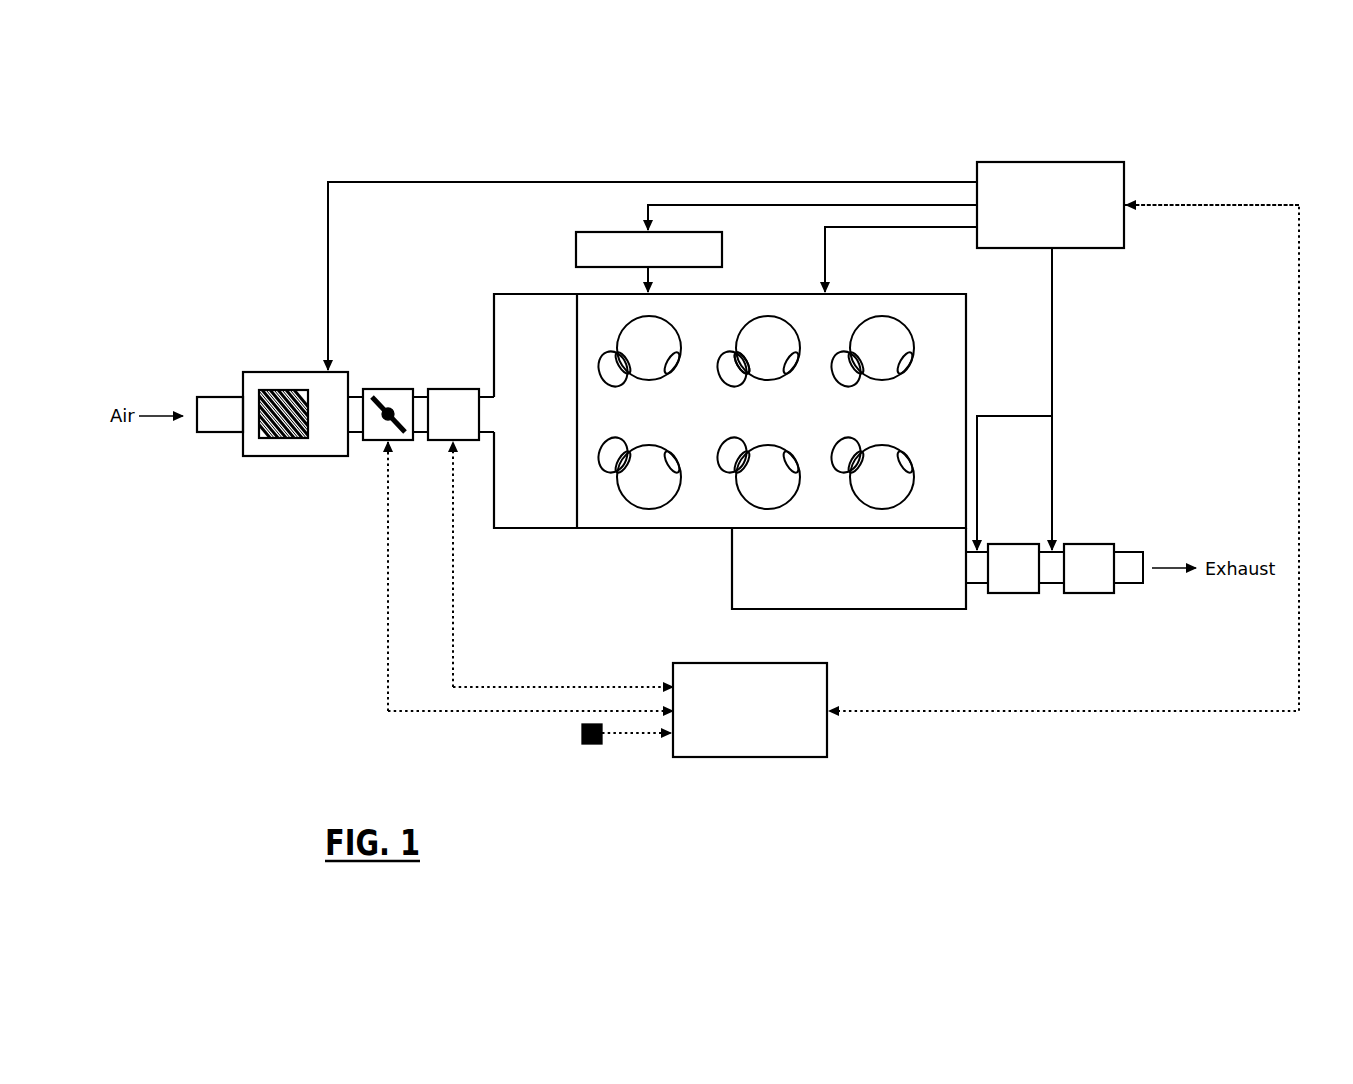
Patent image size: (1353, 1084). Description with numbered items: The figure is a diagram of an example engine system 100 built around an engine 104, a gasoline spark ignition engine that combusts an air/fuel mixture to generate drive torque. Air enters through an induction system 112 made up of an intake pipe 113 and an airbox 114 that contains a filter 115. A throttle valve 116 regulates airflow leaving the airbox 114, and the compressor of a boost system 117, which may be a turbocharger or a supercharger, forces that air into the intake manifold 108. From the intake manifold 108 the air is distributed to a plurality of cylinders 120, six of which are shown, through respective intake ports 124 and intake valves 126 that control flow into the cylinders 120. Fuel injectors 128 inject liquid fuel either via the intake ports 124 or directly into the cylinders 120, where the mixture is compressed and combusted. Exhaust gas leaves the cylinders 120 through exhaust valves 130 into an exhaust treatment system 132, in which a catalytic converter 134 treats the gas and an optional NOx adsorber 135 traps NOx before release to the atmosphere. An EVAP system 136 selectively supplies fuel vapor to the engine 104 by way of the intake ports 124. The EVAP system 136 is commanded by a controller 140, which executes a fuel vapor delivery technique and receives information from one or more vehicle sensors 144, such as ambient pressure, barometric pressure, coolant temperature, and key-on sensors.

The engine system 100 is at (312, 741).
The engine 104 is at (600, 528).
The intake manifold 108 is at (532, 528).
The induction system 112 is at (197, 366).
The intake pipe 113 is at (217, 434).
The airbox 114 is at (324, 458).
The filter 115 is at (284, 440).
The throttle valve 116 is at (388, 388).
The boost system 117 is at (454, 388).
The cylinders 120 is at (653, 510).
The intake ports 124 is at (613, 440).
The intake valves 126 is at (750, 369).
The fuel injectors 128 is at (576, 250).
The exhaust valves 130 is at (896, 456).
The exhaust treatment system 132 is at (848, 610).
The catalytic converter 134 is at (1013, 594).
The NOx adsorber 135 is at (1090, 594).
The EVAP system 136 is at (1052, 162).
The controller 140 is at (750, 758).
The vehicle sensors 144 is at (582, 735).